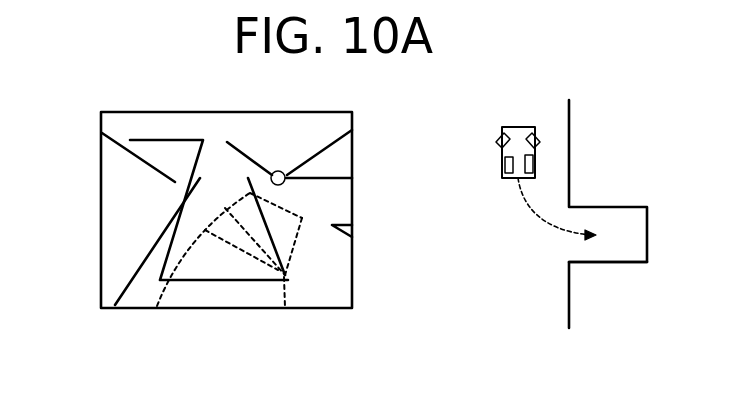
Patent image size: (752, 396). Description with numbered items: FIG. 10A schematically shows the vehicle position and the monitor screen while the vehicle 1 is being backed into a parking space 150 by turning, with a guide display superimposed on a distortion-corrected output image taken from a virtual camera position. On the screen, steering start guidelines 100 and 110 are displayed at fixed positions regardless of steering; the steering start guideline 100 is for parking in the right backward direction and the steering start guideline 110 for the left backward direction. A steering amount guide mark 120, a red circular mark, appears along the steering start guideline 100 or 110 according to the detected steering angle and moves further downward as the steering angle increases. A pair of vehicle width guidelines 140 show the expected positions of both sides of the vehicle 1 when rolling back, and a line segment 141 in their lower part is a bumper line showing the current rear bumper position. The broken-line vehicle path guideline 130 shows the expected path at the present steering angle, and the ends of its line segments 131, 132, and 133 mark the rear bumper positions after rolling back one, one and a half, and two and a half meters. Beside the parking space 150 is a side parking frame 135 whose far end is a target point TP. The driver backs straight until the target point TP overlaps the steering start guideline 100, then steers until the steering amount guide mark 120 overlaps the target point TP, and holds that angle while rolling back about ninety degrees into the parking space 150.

The vehicle 1 is at (520, 128).
The steering start guideline 100 is at (330, 147).
The steering start guideline 110 is at (127, 153).
The steering amount guide mark 120 is at (282, 172).
The vehicle path guideline 130 is at (285, 296).
The line segment 131 is at (253, 260).
The line segment 132 is at (245, 225).
The line segment 133 is at (297, 214).
The side parking frame 135 is at (328, 180).
The vehicle width guidelines 140 is at (167, 248).
The line segment (bumper line) 141 is at (213, 280).
The parking space 150 is at (615, 227).
The target point TP is at (277, 171).